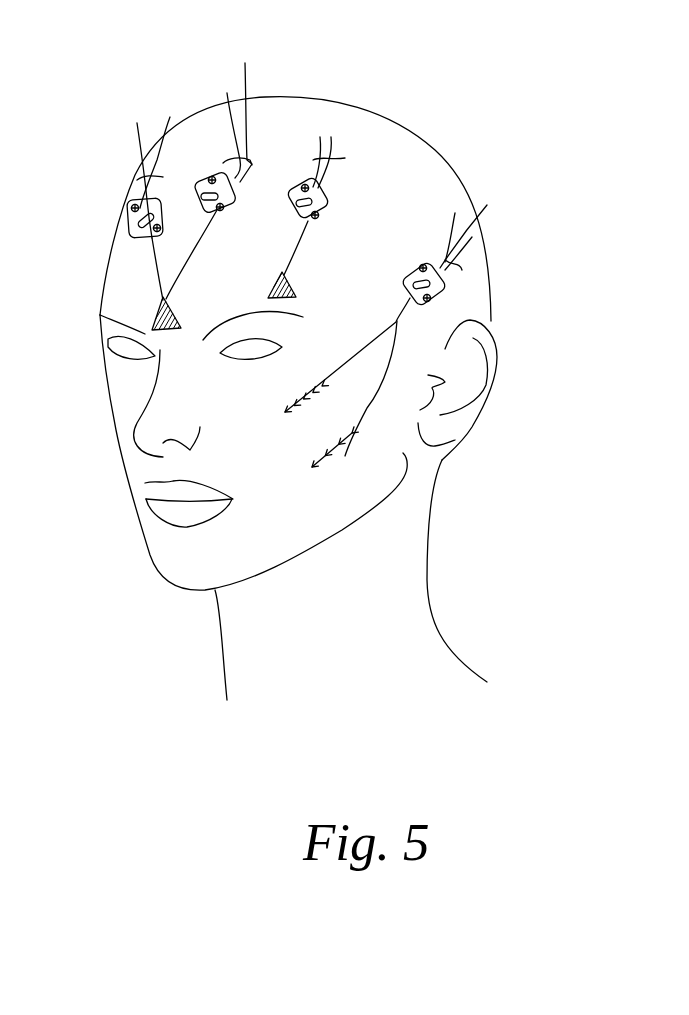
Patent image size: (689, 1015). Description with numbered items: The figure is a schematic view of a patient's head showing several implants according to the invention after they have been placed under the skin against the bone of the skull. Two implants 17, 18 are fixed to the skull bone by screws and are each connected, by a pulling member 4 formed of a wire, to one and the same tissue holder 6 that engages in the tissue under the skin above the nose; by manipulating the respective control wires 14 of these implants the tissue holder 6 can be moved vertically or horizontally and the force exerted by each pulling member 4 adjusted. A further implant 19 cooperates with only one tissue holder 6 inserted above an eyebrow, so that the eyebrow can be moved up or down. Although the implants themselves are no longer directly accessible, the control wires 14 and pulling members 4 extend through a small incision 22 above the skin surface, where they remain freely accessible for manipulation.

The pulling member 4 is at (165, 133).
The tissue holder 6 is at (160, 312).
The control wire 14 is at (145, 157).
The implant 17 is at (130, 208).
The implant 18 is at (212, 180).
The implant 19 is at (325, 203).
The incision 22 is at (227, 187).